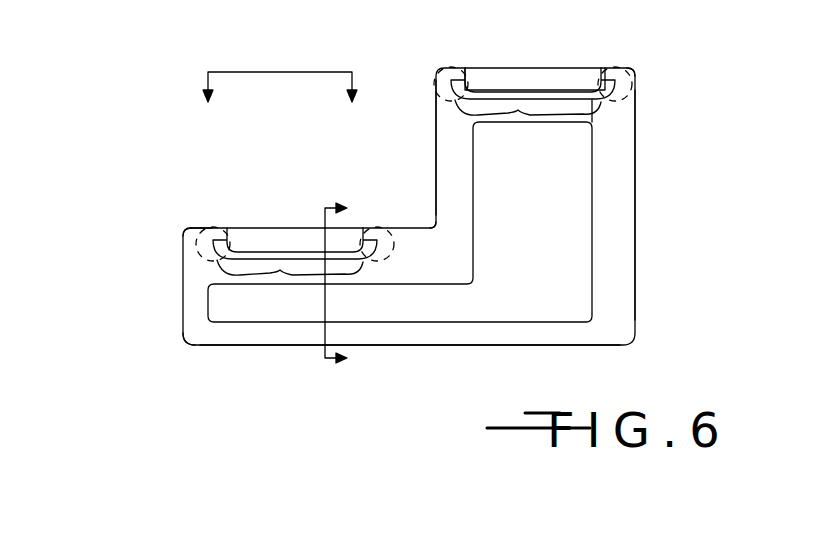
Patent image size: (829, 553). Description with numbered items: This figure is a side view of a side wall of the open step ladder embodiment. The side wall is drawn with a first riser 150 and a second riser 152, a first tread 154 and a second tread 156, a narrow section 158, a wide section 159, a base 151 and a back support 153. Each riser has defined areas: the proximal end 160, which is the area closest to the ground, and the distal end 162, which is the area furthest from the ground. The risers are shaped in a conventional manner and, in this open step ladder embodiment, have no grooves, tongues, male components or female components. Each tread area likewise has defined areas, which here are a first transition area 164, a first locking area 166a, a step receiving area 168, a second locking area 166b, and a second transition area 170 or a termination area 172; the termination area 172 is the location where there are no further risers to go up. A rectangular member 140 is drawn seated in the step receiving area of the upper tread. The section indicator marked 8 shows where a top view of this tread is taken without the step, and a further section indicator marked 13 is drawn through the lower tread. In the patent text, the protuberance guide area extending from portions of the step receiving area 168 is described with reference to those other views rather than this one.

The rail member 140 is at (535, 81).
The first riser 150 is at (176, 233).
The base 151 is at (472, 346).
The second riser 152 is at (430, 72).
The back support 153 is at (637, 200).
The first tread 154 is at (432, 222).
The second tread 156 is at (630, 45).
The narrow section 158 is at (540, 240).
The wide section 159 is at (592, 106).
The proximal end 160 is at (178, 342).
The distal end 162 is at (183, 232).
The first transition area 164 is at (200, 218).
The first locking area 166a is at (207, 257).
The second locking area 166b is at (377, 262).
The step receiving area 168 is at (280, 272).
The second transition area 170 is at (440, 217).
The termination area 172 is at (648, 68).
The lines 8- 8 is at (280, 101).
The section line 13 is at (352, 287).